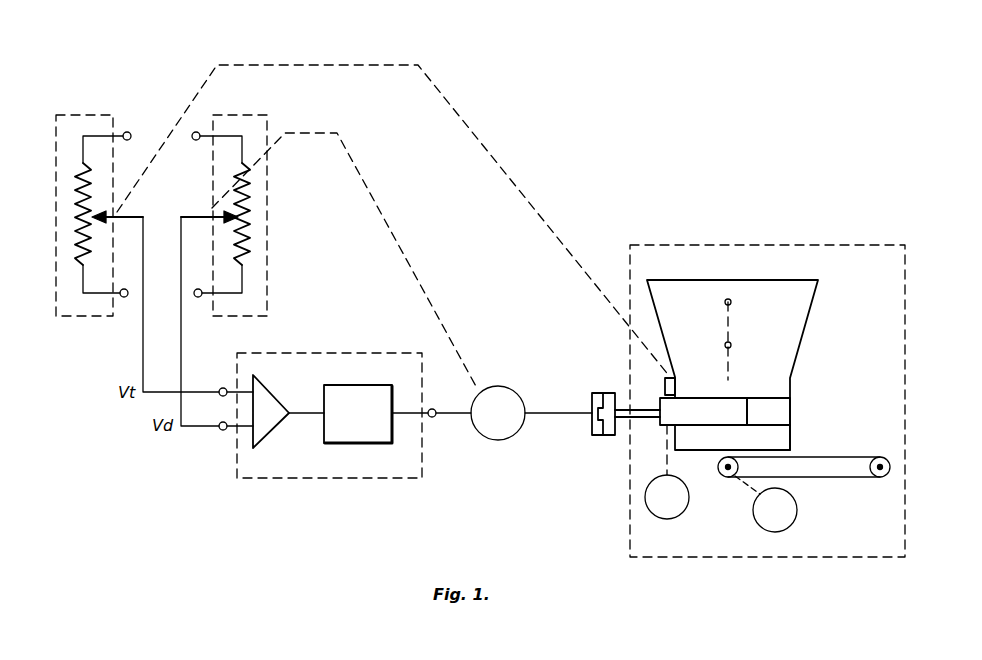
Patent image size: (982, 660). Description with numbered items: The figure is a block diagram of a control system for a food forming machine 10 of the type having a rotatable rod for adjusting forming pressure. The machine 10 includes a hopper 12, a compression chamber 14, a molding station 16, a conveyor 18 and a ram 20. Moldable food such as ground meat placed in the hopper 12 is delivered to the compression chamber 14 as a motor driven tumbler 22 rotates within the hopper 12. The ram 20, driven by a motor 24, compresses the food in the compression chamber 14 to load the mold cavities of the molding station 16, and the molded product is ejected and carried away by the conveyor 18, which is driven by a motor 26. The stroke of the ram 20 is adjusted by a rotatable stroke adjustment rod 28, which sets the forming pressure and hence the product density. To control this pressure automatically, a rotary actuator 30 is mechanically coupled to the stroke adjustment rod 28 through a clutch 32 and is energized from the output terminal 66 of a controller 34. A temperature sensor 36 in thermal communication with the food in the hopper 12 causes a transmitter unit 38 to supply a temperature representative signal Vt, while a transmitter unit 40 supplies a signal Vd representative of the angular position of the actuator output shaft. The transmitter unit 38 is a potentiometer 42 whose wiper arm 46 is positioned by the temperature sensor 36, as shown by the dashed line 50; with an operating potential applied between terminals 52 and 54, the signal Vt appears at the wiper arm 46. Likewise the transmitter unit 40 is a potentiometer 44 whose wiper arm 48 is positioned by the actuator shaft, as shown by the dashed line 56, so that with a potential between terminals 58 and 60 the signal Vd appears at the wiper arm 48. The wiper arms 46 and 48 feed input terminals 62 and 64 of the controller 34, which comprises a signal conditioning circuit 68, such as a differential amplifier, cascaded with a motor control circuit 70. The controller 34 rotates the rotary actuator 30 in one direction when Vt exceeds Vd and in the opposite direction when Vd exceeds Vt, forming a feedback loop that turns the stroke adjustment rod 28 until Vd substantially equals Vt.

The food forming machine 10 is at (853, 558).
The hopper 12 is at (777, 285).
The compression chamber 14 is at (780, 413).
The molding station 16 is at (780, 441).
The conveyor 18 is at (843, 457).
The ram 20 is at (660, 400).
The motor driven tumbler 22 is at (731, 345).
The motor 24 is at (675, 518).
The motor 26 is at (797, 512).
The stroke adjustment rod 28 is at (642, 418).
The rotary actuator 30 is at (520, 392).
The clutch 32 is at (592, 437).
The controller 34 is at (329, 415).
The temperature sensor 36 is at (675, 387).
The transmitter unit 38 is at (86, 115).
The transmitter unit 40 is at (258, 114).
The potentiometer 42 is at (78, 222).
The potentiometer 44 is at (250, 218).
The wiper arm 46 is at (118, 218).
The wiper arm 48 is at (205, 218).
The dashed line 50 is at (368, 65).
The terminal 52 is at (129, 132).
The terminal 54 is at (124, 297).
The dashed line 56 is at (402, 243).
The terminal 58 is at (195, 140).
The terminal 60 is at (198, 297).
The input terminal 62 is at (222, 387).
The input terminal 64 is at (222, 431).
The output terminal 66 is at (433, 418).
The signal conditioning circuit 68 is at (276, 395).
The motor control circuit 70 is at (355, 385).